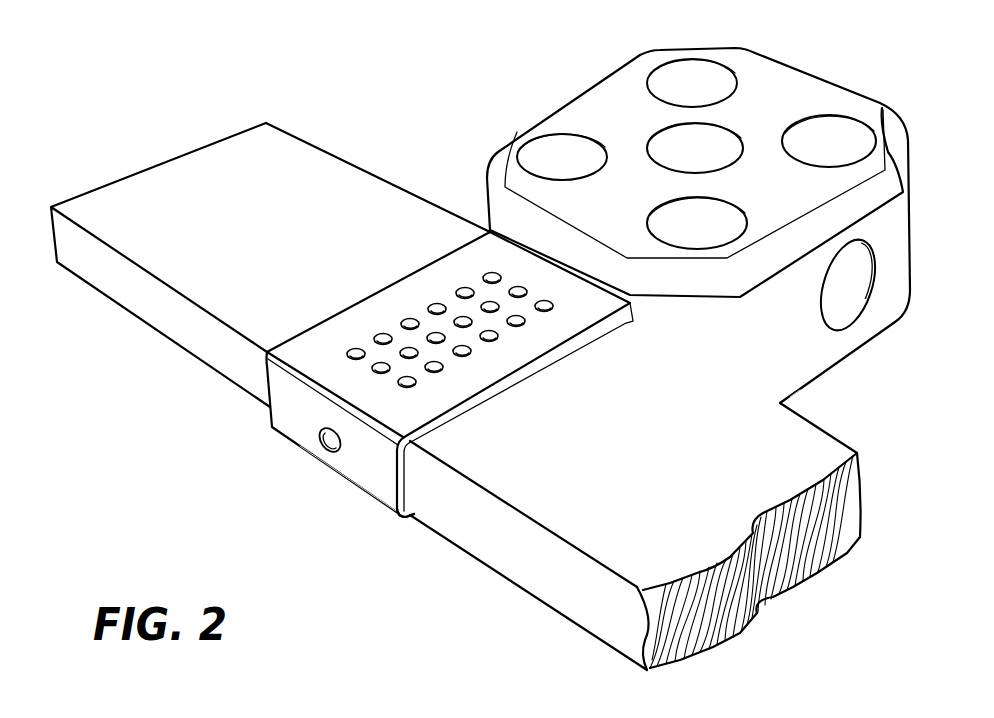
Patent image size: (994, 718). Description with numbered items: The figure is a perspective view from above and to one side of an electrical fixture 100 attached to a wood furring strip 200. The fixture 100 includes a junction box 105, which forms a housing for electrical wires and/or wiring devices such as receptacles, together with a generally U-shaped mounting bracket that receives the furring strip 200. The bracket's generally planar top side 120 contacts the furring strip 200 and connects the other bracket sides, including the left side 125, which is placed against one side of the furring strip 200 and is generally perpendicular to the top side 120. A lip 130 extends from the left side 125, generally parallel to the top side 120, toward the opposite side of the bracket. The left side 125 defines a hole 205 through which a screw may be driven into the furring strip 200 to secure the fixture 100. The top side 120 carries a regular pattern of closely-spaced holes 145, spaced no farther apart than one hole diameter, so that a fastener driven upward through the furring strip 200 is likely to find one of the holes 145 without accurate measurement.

The electrical fixture 100 is at (540, 73).
The junction box 105 is at (810, 75).
The top side 120 is at (315, 322).
The left side 125 is at (368, 480).
The lip 130 is at (413, 520).
The holes 145 is at (432, 336).
The wood furring strip 200 is at (125, 190).
The hole 205 is at (322, 447).